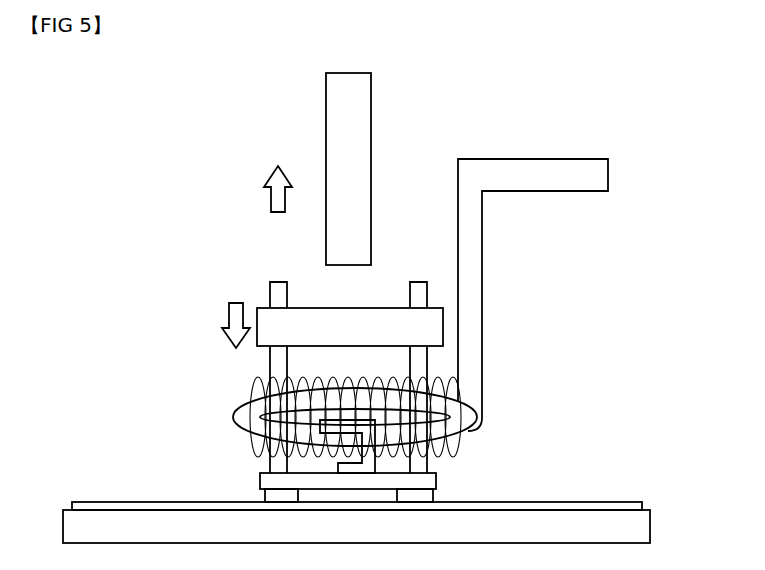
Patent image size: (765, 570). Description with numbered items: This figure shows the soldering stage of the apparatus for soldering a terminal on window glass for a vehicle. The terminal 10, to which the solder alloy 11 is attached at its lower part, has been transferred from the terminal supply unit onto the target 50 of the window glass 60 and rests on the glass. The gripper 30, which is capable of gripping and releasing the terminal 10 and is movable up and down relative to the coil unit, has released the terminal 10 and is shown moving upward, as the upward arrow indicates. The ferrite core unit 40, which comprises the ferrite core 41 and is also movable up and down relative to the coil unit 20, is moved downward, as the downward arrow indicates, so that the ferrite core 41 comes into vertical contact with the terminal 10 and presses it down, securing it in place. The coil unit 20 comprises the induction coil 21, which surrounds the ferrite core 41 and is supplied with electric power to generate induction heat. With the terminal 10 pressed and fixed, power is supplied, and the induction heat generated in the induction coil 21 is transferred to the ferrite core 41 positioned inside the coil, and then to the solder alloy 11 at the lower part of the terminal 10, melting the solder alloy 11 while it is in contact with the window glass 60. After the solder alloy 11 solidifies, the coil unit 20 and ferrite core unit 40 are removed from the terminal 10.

The terminal 10 is at (392, 462).
The solder alloy 11 is at (447, 492).
The coil unit 20 is at (538, 148).
The induction coil 21 is at (225, 416).
The gripper 30 is at (326, 92).
The ferrite core unit 40 is at (248, 368).
The ferrite core 41 is at (270, 282).
The target 50 is at (656, 503).
The window glass 60 is at (663, 528).